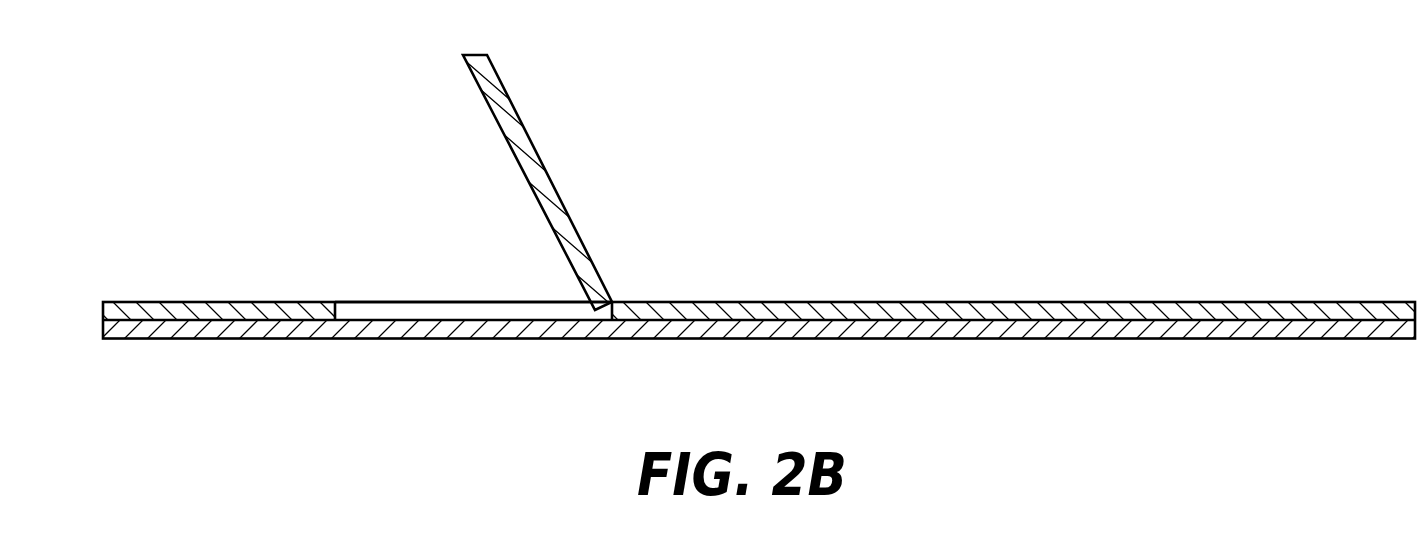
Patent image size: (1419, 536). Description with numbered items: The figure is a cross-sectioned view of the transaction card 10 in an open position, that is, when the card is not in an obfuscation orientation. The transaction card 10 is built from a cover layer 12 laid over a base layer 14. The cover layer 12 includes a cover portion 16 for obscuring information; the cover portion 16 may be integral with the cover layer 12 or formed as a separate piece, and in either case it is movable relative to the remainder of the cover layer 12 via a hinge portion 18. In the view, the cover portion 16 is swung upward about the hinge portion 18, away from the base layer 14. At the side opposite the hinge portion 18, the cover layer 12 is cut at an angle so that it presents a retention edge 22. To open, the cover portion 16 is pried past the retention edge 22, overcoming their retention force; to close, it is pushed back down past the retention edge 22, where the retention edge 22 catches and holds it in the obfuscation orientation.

The transaction card 10 is at (1163, 212).
The cover layer 12 is at (942, 310).
The base layer 14 is at (887, 333).
The cover portion 16 is at (525, 148).
The hinge portion 18 is at (612, 302).
The retention edge 22 is at (323, 316).